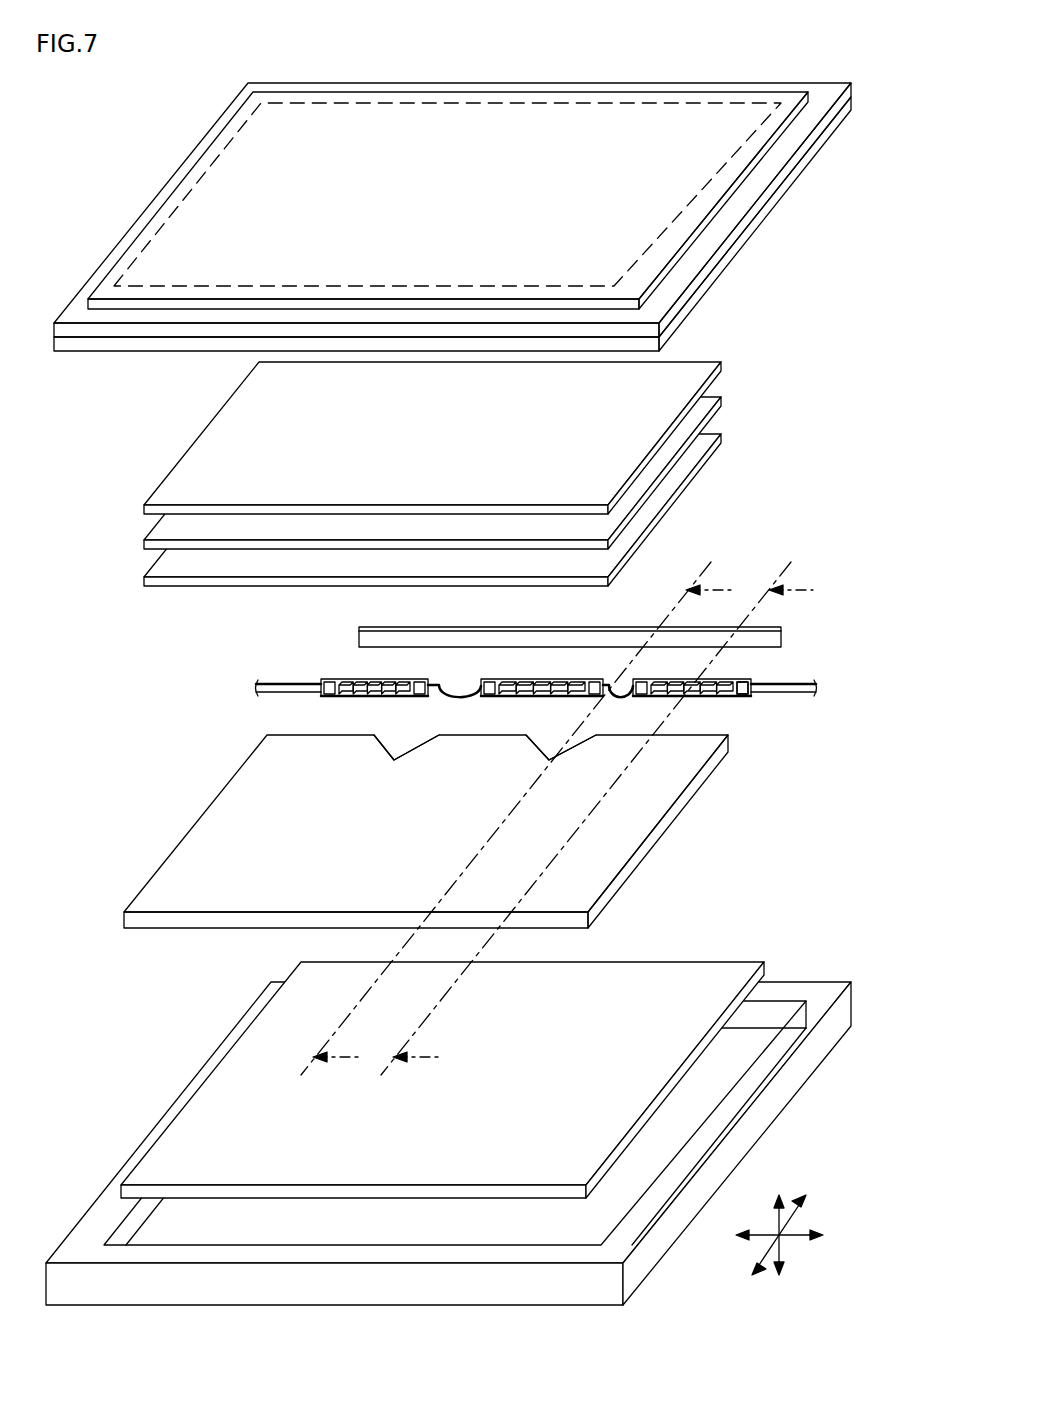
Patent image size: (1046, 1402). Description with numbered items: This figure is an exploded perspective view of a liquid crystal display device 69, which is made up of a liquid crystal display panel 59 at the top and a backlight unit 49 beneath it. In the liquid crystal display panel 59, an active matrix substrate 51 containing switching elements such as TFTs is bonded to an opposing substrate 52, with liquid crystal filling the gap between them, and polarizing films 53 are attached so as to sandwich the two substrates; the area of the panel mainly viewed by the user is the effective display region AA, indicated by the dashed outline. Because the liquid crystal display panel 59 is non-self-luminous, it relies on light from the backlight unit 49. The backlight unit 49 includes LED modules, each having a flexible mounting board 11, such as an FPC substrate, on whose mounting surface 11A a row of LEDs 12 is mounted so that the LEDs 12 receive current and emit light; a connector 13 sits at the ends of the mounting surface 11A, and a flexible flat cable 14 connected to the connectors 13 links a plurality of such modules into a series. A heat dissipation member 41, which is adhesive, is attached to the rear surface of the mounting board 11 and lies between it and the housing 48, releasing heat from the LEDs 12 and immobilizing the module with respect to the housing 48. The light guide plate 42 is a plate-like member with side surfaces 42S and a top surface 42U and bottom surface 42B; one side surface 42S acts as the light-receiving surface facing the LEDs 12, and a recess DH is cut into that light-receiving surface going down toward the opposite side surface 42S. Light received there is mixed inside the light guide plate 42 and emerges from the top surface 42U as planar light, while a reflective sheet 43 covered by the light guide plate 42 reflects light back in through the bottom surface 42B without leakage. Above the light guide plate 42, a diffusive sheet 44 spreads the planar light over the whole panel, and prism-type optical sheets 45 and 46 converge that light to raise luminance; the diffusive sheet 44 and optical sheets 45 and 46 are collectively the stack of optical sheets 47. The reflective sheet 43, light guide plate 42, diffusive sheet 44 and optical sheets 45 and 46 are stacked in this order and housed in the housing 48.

The liquid crystal display device 69 is at (114, 190).
The liquid crystal display panel 59 is at (768, 268).
The active matrix substrate 51 is at (677, 318).
The opposing substrate 52 is at (688, 295).
The polarizing film 53 is at (700, 228).
The effective display region AA is at (712, 102).
The backlight unit 49 is at (80, 363).
The stack of optical sheets 47 is at (118, 412).
The optical sheet 46 is at (173, 468).
The optical sheet 45 is at (143, 541).
The diffusive sheet 44 is at (143, 579).
The heat dissipation member 41 is at (376, 626).
The LED 12 is at (420, 700).
The connector 13 is at (330, 681).
The mounting board 11 is at (374, 681).
The flexible flat cable 14 is at (290, 683).
The mounting surface 11A is at (737, 698).
The light guide plate 42 is at (807, 740).
The top surface 42U is at (712, 745).
The side surface 42S is at (714, 765).
The bottom surface 42B is at (708, 778).
The recess DH is at (404, 748).
The reflective sheet 43 is at (250, 1062).
The housing 48 is at (158, 1120).